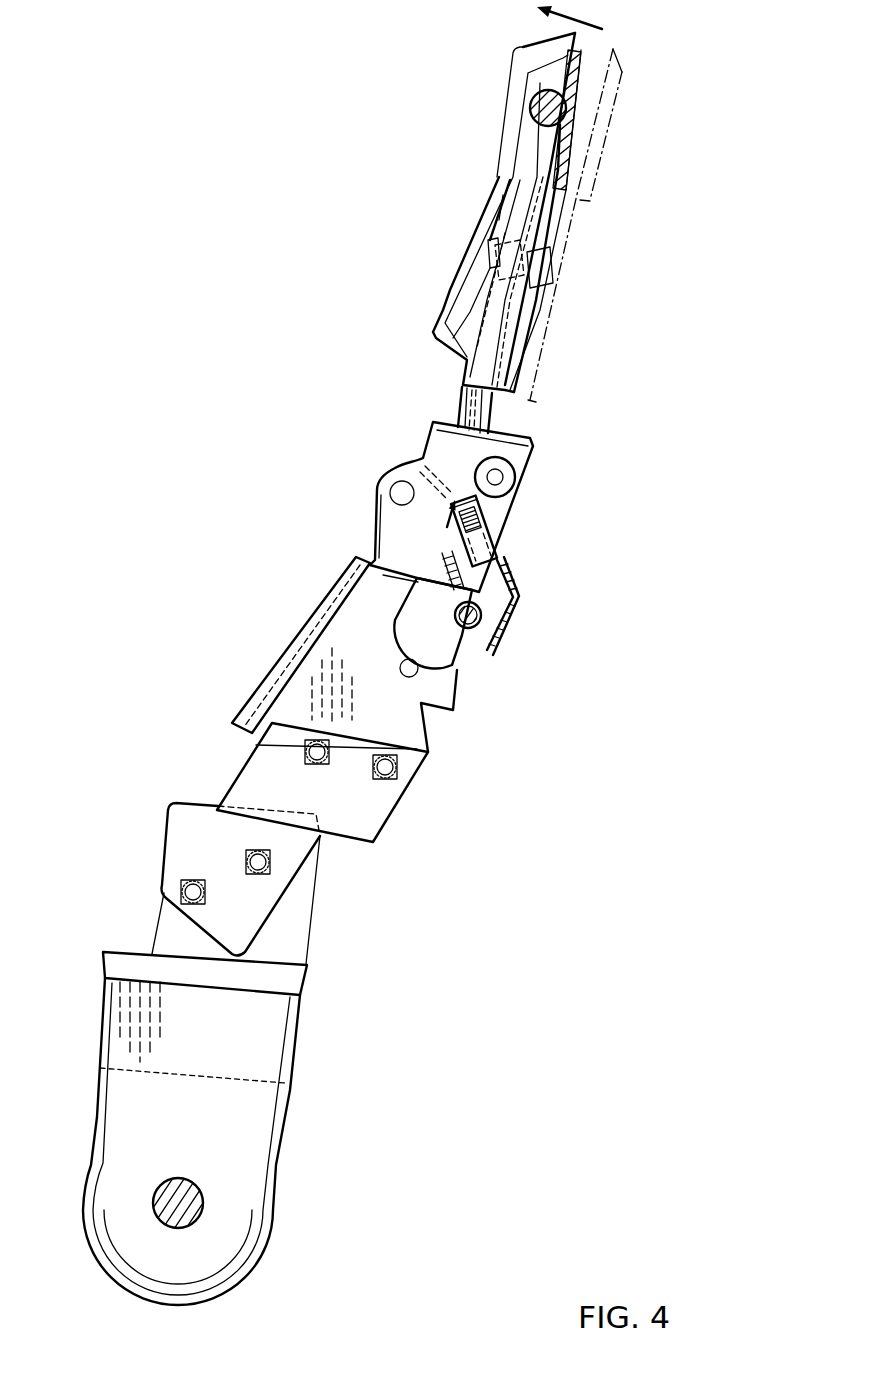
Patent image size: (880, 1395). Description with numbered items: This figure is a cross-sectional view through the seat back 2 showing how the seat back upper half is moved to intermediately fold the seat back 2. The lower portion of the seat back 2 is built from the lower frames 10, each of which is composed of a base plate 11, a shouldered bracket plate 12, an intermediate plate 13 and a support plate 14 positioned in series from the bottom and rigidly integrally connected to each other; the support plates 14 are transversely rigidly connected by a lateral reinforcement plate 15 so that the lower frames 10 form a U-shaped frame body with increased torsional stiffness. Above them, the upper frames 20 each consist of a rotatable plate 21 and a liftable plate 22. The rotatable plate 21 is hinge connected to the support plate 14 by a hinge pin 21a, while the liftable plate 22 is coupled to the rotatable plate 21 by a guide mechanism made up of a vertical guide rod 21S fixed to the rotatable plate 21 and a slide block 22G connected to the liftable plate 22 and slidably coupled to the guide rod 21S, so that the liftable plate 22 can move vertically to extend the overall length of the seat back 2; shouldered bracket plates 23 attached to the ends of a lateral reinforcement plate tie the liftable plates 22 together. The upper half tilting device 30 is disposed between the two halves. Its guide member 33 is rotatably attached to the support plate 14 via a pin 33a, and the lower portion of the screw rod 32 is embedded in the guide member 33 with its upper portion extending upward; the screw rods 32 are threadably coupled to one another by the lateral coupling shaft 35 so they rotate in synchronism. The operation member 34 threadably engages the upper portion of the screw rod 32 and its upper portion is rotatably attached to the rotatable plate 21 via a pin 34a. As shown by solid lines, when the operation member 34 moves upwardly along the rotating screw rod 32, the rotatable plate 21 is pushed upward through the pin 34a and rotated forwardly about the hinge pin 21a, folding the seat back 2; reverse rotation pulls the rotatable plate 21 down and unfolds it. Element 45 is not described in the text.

The seat back 2 is at (225, 392).
The lower frames 10 is at (228, 697).
The base plate 11 is at (258, 1028).
The shouldered bracket plate 12 is at (273, 885).
The intermediate plate 13 is at (427, 723).
The support plate 14 is at (443, 697).
The lateral reinforcement plate 15 is at (503, 628).
The upper frames 20 is at (372, 355).
The rotatable plate 21 is at (427, 311).
The hinge pin 21a is at (395, 490).
The guide rod 21S is at (513, 307).
The liftable plate 22 is at (457, 335).
The slide block 22G is at (493, 240).
The shouldered bracket plate 23 is at (573, 108).
The upper half tilting device 30 is at (503, 495).
The screw rod 32 is at (470, 578).
The guide member 33 is at (454, 637).
The pin 33a is at (418, 668).
The operation member 34 is at (520, 503).
The pin 34a is at (497, 477).
The lateral coupling shaft 35 is at (487, 610).
The bolt 45 is at (535, 104).